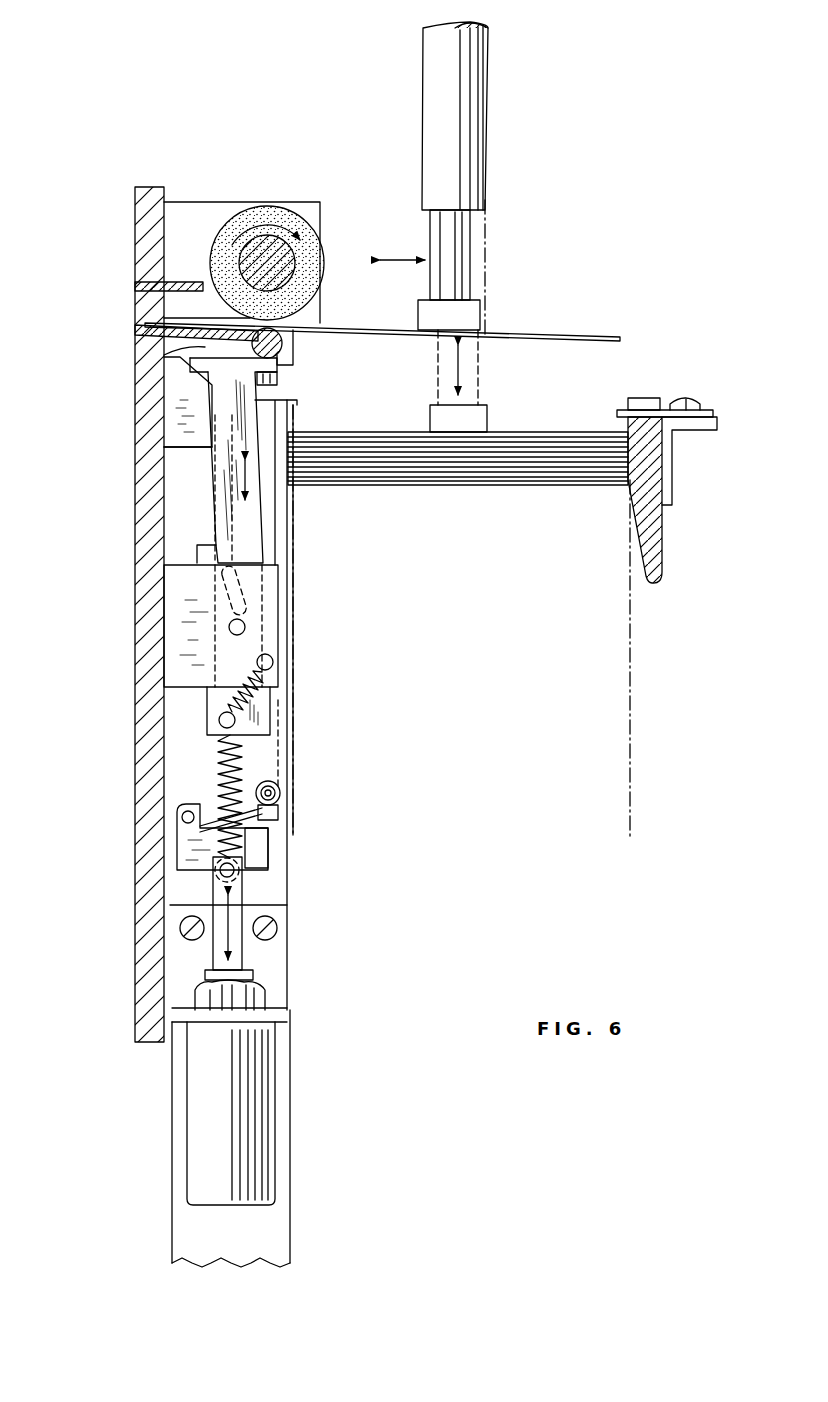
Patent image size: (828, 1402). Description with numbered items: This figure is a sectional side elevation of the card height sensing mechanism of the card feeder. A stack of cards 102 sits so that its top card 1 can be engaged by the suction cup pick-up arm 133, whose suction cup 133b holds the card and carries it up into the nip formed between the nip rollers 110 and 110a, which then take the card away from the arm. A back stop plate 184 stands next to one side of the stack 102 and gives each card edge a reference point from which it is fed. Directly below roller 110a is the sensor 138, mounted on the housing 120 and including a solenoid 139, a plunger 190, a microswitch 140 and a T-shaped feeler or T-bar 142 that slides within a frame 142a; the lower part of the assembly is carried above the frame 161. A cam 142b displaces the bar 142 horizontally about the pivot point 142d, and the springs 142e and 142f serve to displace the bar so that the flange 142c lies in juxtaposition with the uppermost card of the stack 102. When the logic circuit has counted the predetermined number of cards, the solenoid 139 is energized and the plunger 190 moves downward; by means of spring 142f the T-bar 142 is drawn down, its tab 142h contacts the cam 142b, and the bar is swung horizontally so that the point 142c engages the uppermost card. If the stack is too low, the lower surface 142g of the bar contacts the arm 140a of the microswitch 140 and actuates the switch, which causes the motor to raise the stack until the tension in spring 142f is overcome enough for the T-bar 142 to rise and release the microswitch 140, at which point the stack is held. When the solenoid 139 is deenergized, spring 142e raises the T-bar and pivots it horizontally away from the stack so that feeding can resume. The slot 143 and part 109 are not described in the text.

The card 1 is at (607, 330).
The stack of cards 102 is at (523, 432).
The flange plate 109 is at (620, 405).
The nip roller 110 is at (262, 210).
The nip roller 110a is at (287, 343).
The housing 120 is at (150, 835).
The suction cup pick-up arm 133 is at (440, 72).
The suction cup 133b is at (478, 328).
The sensor 138 is at (200, 515).
The solenoid 139 is at (203, 1107).
The microswitch 140 is at (258, 850).
The arm of microswitch 140a is at (272, 808).
The T-bar 142 is at (255, 543).
The frame 142a is at (183, 650).
The cam 142b is at (183, 380).
The flange 142c is at (277, 378).
The pivot point 142d is at (245, 627).
The spring 142e is at (262, 700).
The lower surface of bar 142g is at (253, 740).
The spring 142f is at (240, 775).
The tab 142h is at (207, 347).
The slot 143 is at (280, 580).
The frame 161 is at (192, 1238).
The back stop plate 184 is at (660, 545).
The plunger 190 is at (243, 952).